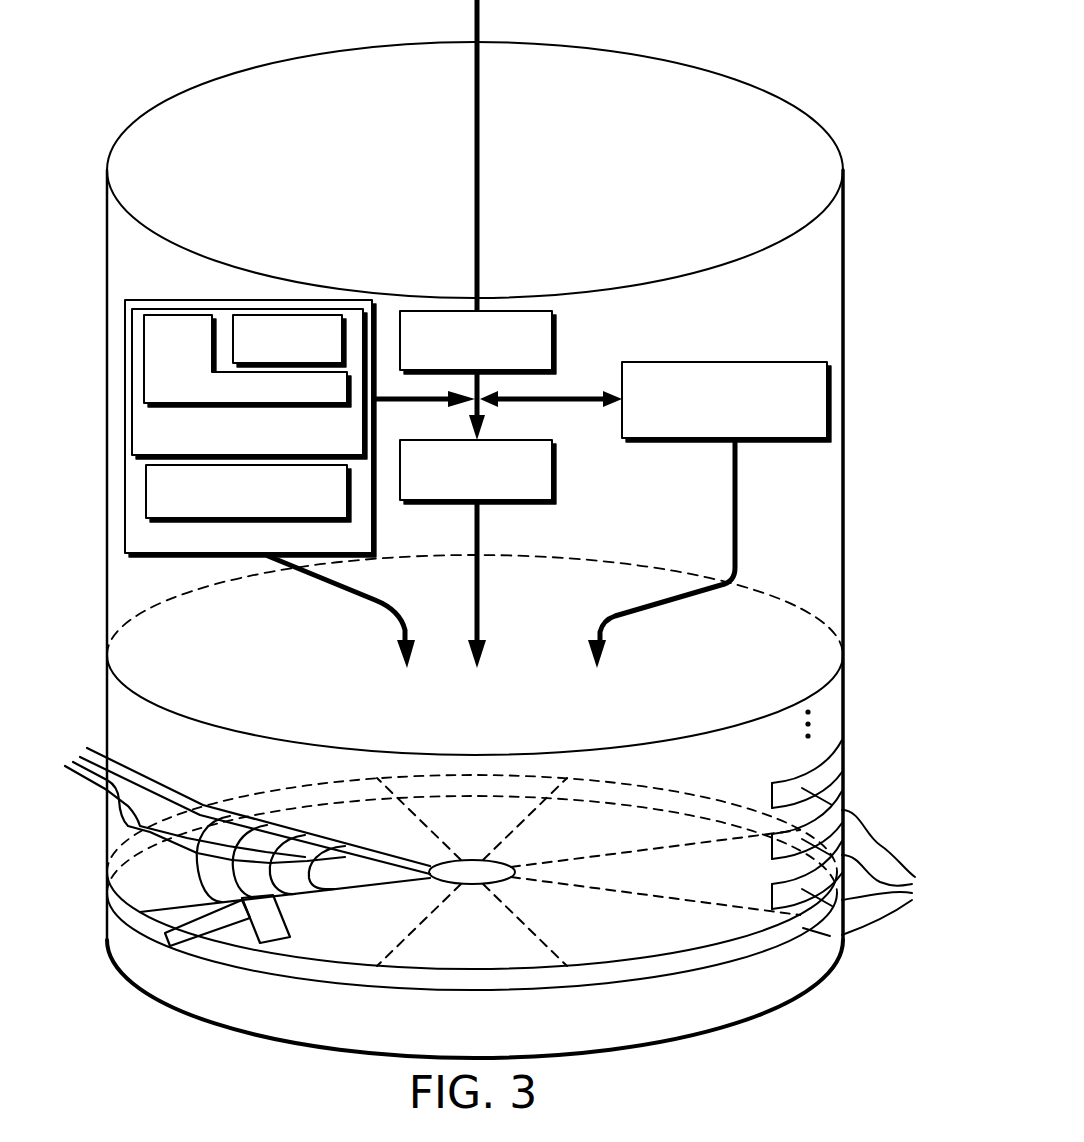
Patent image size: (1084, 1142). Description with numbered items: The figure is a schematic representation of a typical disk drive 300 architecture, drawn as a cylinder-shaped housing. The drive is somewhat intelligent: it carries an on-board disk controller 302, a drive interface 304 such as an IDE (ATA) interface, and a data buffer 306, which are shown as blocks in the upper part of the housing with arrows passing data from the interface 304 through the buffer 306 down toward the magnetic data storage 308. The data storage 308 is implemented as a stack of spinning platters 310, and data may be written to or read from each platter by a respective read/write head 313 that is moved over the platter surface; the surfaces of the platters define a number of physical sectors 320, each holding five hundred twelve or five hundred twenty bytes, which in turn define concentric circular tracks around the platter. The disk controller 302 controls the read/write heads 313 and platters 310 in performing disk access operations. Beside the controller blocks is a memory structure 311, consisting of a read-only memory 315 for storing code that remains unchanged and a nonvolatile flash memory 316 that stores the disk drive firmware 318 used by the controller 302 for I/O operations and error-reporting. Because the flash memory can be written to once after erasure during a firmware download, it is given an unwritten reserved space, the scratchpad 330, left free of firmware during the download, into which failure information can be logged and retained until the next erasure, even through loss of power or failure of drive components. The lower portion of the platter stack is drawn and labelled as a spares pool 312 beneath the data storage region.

The disk drive 300 is at (818, 75).
The disk controller 302 is at (712, 413).
The drive interface 304 is at (464, 355).
The data buffer 306 is at (464, 483).
The magnetic data storage 308 is at (191, 776).
The platters 310 is at (858, 838).
The memory structure 311 is at (295, 544).
The spares pool 312 is at (453, 1036).
The read/write head 313 is at (217, 968).
The read-only memory 315 is at (234, 506).
The nonvolatile memory 316 is at (308, 443).
The disk drive firmware 318 is at (180, 315).
The sectors 320 is at (240, 824).
The scratchpad 330 is at (284, 315).